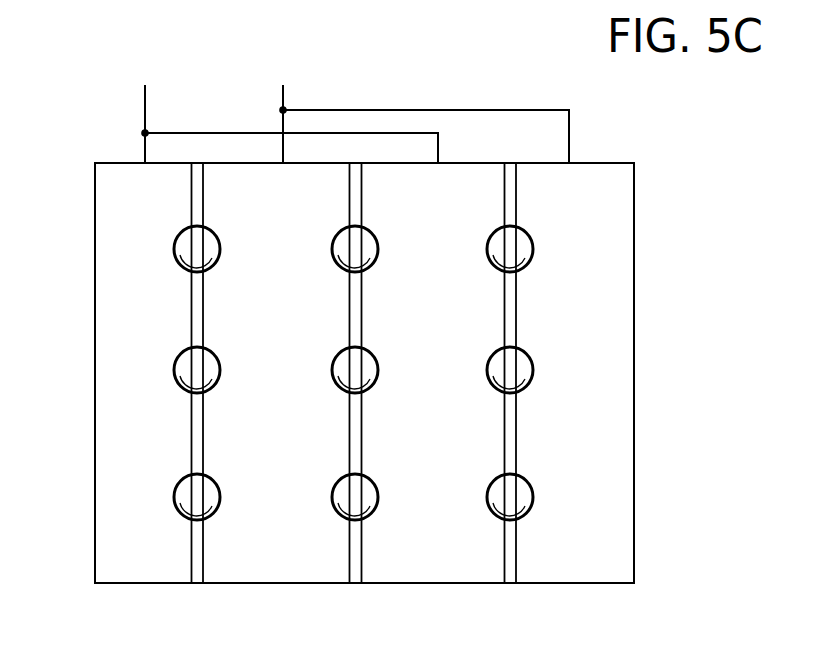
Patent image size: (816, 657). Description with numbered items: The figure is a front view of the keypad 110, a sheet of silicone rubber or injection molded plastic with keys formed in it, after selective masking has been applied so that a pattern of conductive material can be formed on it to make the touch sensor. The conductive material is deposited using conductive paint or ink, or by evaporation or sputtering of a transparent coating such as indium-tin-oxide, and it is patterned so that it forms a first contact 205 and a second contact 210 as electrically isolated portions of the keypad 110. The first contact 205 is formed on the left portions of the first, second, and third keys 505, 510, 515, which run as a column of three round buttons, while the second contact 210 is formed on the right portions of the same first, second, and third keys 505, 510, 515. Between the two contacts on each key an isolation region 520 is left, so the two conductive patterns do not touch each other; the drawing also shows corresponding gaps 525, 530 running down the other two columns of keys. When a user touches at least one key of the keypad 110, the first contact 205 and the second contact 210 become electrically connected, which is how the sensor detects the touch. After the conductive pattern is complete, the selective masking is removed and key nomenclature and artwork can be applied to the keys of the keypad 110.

The keypad 110 is at (590, 161).
The first contact 205 is at (140, 95).
The second contact 210 is at (285, 93).
The first key 505 is at (175, 247).
The second key 510 is at (177, 371).
The third key 515 is at (175, 505).
The isolation region 520 is at (198, 563).
The second column electrode 525 is at (355, 567).
The third column electrode 530 is at (510, 570).